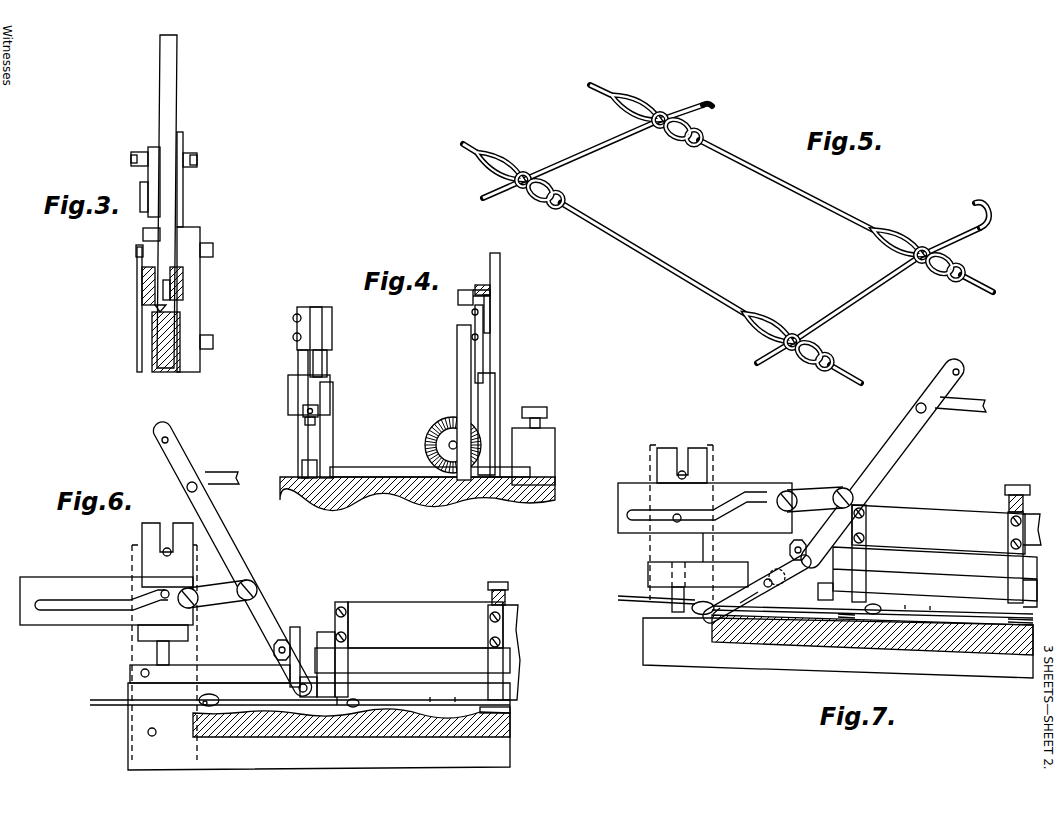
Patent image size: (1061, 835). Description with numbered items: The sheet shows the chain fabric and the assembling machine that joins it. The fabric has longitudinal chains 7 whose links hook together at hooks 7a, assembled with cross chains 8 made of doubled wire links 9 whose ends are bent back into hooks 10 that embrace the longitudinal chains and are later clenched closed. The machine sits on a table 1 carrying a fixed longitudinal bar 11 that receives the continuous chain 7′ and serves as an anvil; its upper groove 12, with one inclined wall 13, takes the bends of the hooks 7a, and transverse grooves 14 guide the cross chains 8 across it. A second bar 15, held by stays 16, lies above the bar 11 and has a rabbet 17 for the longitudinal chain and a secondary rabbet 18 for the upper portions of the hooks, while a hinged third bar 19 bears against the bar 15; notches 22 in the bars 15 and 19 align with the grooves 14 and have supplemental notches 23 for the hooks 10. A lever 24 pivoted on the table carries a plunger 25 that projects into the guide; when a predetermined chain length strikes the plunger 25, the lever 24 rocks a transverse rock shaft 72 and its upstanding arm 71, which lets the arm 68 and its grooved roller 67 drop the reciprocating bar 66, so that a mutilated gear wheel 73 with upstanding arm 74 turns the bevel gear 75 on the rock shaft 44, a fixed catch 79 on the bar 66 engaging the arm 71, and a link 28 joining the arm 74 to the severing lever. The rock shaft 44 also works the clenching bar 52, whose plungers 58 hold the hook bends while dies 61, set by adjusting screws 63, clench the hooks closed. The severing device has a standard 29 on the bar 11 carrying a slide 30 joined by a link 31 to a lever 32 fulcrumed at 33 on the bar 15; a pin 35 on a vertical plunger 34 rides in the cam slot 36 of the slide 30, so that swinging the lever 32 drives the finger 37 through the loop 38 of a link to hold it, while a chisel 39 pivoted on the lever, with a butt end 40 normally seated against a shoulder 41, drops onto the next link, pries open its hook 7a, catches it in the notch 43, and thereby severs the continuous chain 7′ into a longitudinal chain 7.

In FIG. 4, the table or base 1 is at (505, 500).
In FIG. 5, the longitudinal chain 7 is at (668, 258).
In FIG. 6, the continuous chain 7′ is at (90, 702).
In FIG. 7, the continuous chain 7′ is at (955, 605).
In FIG. 5, the hook 7a is at (566, 199).
In FIG. 6, the hook 7a is at (205, 708).
In FIG. 7, the hook 7a is at (877, 604).
In FIG. 5, the cross chain 8 is at (590, 150).
In FIG. 5, the doubled wire link 9 is at (705, 125).
In FIG. 5, the hook 10 is at (664, 114).
In FIG. 3, the longitudinal bar 11 is at (152, 348).
In FIG. 6, the longitudinal bar 11 is at (508, 756).
In FIG. 7, the longitudinal bar 11 is at (965, 668).
In FIG. 3, the longitudinal groove 12 is at (152, 327).
In FIG. 4, the longitudinal groove 12 is at (315, 421).
In FIG. 6, the longitudinal groove 12 is at (510, 716).
In FIG. 7, the longitudinal groove 12 is at (938, 648).
In FIG. 3, the inclined side wall 13 is at (157, 308).
In FIG. 6, the transverse groove 14 is at (512, 730).
In FIG. 7, the transverse groove 14 is at (848, 620).
In FIG. 3, the second longitudinal bar 15 is at (183, 277).
In FIG. 6, the second longitudinal bar 15 is at (520, 680).
In FIG. 7, the second longitudinal bar 15 is at (1000, 580).
In FIG. 3, the stay 16 is at (195, 294).
In FIG. 3, the longitudinal rabbet 17 is at (170, 297).
In FIG. 6, the longitudinal rabbet 17 is at (455, 700).
In FIG. 7, the longitudinal rabbet 17 is at (930, 606).
In FIG. 6, the secondary longitudinal rabbet 18 is at (430, 700).
In FIG. 7, the secondary longitudinal rabbet 18 is at (905, 605).
In FIG. 3, the third bar 19 is at (142, 284).
In FIG. 4, the third bar 19 is at (288, 388).
In FIG. 6, the notch 22 is at (337, 705).
In FIG. 6, the supplemental notch 23 is at (340, 690).
In FIG. 7, the supplemental notch 23 is at (852, 580).
In FIG. 4, the lever 24 is at (320, 442).
In FIG. 4, the plunger 25 is at (318, 408).
In FIG. 6, the pin 28 is at (225, 475).
In FIG. 3, the standard 29 is at (152, 147).
In FIG. 6, the standard 29 is at (132, 548).
In FIG. 7, the standard 29 is at (654, 443).
In FIG. 3, the slide 30 is at (150, 234).
In FIG. 6, the slide 30 is at (48, 582).
In FIG. 7, the slide 30 is at (625, 482).
In FIG. 3, the link 31 is at (140, 186).
In FIG. 6, the link 31 is at (245, 580).
In FIG. 7, the link 31 is at (810, 490).
In FIG. 3, the lever 32 is at (170, 97).
In FIG. 6, the lever 32 is at (230, 532).
In FIG. 7, the lever 32 is at (905, 445).
In FIG. 6, the fulcrum 33 is at (272, 650).
In FIG. 7, the fulcrum 33 is at (788, 550).
In FIG. 3, the vertically slidable plunger 34 is at (183, 136).
In FIG. 6, the vertically slidable plunger 34 is at (150, 530).
In FIG. 7, the vertically slidable plunger 34 is at (700, 452).
In FIG. 6, the lug or pin 35 is at (161, 592).
In FIG. 7, the lug or pin 35 is at (673, 521).
In FIG. 6, the cam slot 36 is at (62, 610).
In FIG. 7, the cam slot 36 is at (632, 515).
In FIG. 6, the finger 37 is at (157, 648).
In FIG. 7, the finger 37 is at (672, 605).
In FIG. 5, the loop 38 is at (506, 162).
In FIG. 6, the loop 38 is at (150, 708).
In FIG. 7, the loop 38 is at (692, 608).
In FIG. 6, the chisel or wedge 39 is at (250, 690).
In FIG. 7, the chisel or wedge 39 is at (735, 620).
In FIG. 6, the butt end 40 is at (310, 690).
In FIG. 7, the butt end 40 is at (785, 582).
In FIG. 6, the shoulder 41 is at (312, 687).
In FIG. 7, the shoulder 41 is at (825, 605).
In FIG. 6, the notch 43 is at (210, 710).
In FIG. 7, the notch 43 is at (715, 614).
In FIG. 4, the rock shaft 44 is at (449, 447).
In FIG. 4, the longitudinal horizontal bar 52 is at (325, 333).
In FIG. 6, the longitudinal horizontal bar 52 is at (420, 612).
In FIG. 7, the longitudinal horizontal bar 52 is at (910, 512).
In FIG. 4, the plunger 58 is at (293, 336).
In FIG. 6, the plunger 58 is at (348, 640).
In FIG. 7, the plunger 58 is at (868, 540).
In FIG. 4, the die 61 is at (327, 360).
In FIG. 6, the adjusting screw 63 is at (508, 586).
In FIG. 7, the adjusting screw 63 is at (1020, 485).
In FIG. 4, the reciprocatory longitudinal bar 66 is at (480, 286).
In FIG. 4, the grooved roller 67 is at (490, 328).
In FIG. 4, the arm 68 is at (483, 349).
In FIG. 4, the upstanding arm 71 is at (457, 339).
In FIG. 4, the transverse rock shaft 72 is at (415, 477).
In FIG. 4, the mutilated gear wheel 73 is at (498, 468).
In FIG. 4, the upstanding arm 74 is at (500, 276).
In FIG. 4, the bevel gear wheel 75 is at (450, 418).
In FIG. 4, the fixed catch 79 is at (458, 298).